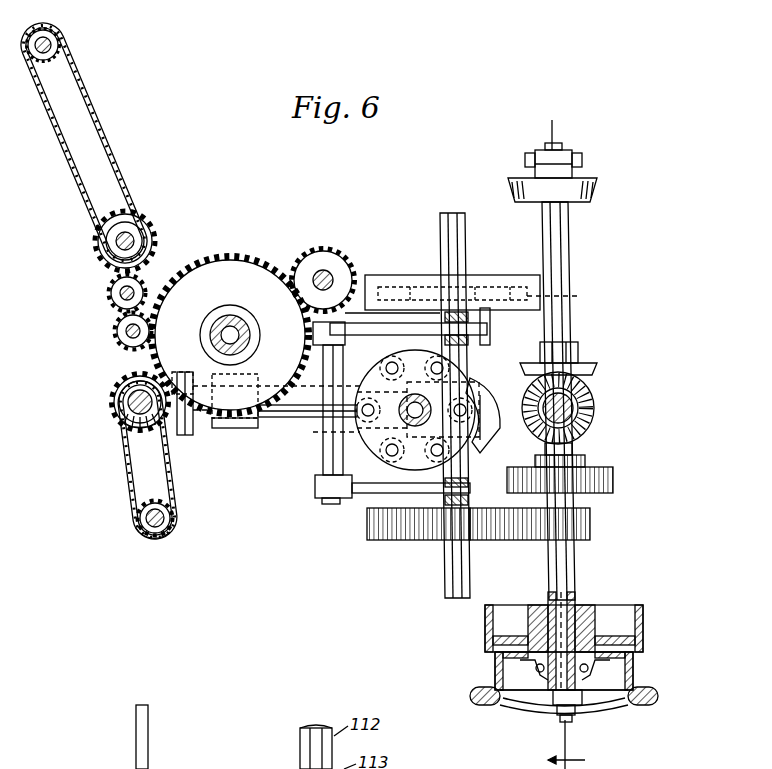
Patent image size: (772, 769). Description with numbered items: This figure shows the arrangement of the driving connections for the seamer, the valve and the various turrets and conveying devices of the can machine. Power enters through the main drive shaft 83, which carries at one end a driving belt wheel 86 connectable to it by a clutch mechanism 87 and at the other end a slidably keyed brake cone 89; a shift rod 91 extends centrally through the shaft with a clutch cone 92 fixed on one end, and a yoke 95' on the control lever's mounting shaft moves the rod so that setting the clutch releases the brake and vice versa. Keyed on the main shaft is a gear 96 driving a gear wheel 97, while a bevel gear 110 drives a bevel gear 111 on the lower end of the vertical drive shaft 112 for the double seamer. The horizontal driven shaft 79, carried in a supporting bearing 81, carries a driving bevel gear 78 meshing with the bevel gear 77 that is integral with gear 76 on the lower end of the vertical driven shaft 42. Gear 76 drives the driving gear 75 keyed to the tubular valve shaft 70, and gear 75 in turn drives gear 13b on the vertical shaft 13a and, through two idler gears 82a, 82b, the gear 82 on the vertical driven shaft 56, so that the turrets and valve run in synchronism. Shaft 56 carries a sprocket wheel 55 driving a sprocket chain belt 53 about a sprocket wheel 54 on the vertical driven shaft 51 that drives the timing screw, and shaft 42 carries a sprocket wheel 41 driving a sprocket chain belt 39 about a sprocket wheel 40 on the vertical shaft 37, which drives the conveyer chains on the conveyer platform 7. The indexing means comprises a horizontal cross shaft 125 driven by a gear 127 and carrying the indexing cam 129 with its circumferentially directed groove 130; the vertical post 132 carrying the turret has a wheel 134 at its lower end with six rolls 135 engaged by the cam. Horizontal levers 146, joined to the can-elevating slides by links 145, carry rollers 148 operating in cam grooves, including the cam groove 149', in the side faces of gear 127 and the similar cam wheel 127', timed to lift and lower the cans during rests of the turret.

The conveyer platform 7 is at (564, 431).
The vertical shaft 13a is at (332, 272).
The gear 13b is at (330, 250).
The vertical shaft 37 is at (145, 530).
The sprocket chain belt 39 is at (130, 500).
The sprocket wheel 40 is at (158, 538).
The sprocket wheel 41 is at (126, 404).
The vertical driven shaft 42 is at (132, 410).
The vertical driven shaft 51 is at (52, 44).
The sprocket chain belt 53 is at (108, 134).
The sprocket wheel 54 is at (58, 60).
The sprocket wheel 55 is at (108, 240).
The vertical driven shaft 56 is at (137, 228).
The tubular supporting shaft 70 is at (220, 318).
The driving gear 75 is at (236, 258).
The gear 76 is at (120, 378).
The bevel gear 77 is at (125, 455).
The driving bevel gear 78 is at (180, 437).
The horizontal driven shaft 79 is at (296, 420).
The supporting bearing 81 is at (256, 430).
The gear 82 is at (102, 259).
The idler gear 82a is at (108, 296).
The idler gear 82b is at (114, 329).
The main drive shaft 83 is at (568, 254).
The driving belt wheel 86 is at (485, 630).
The clutch mechanism 87 is at (625, 708).
The brake cone 89 is at (600, 192).
The shift rod 91 is at (580, 604).
The clutch cone 92 is at (578, 712).
The yoke 95' is at (577, 160).
The gear 96 is at (588, 462).
The gear wheel 97 is at (615, 478).
The bevel gear 110 is at (590, 366).
The bevel gear 111 is at (596, 410).
The drive shaft 112 is at (590, 390).
The horizontal cross shaft 125 is at (462, 243).
The gear 127 is at (418, 544).
The cam wheel 127' is at (452, 281).
The indexing cam 129 is at (492, 390).
The circumferentially directed groove 130 is at (490, 380).
The vertical post 132 is at (316, 432).
The wheel 134 is at (398, 414).
The rolls 135 is at (380, 358).
The links 145 is at (462, 312).
The levers 146 is at (400, 337).
The rollers 148 is at (480, 290).
The cam groove 149' is at (570, 296).